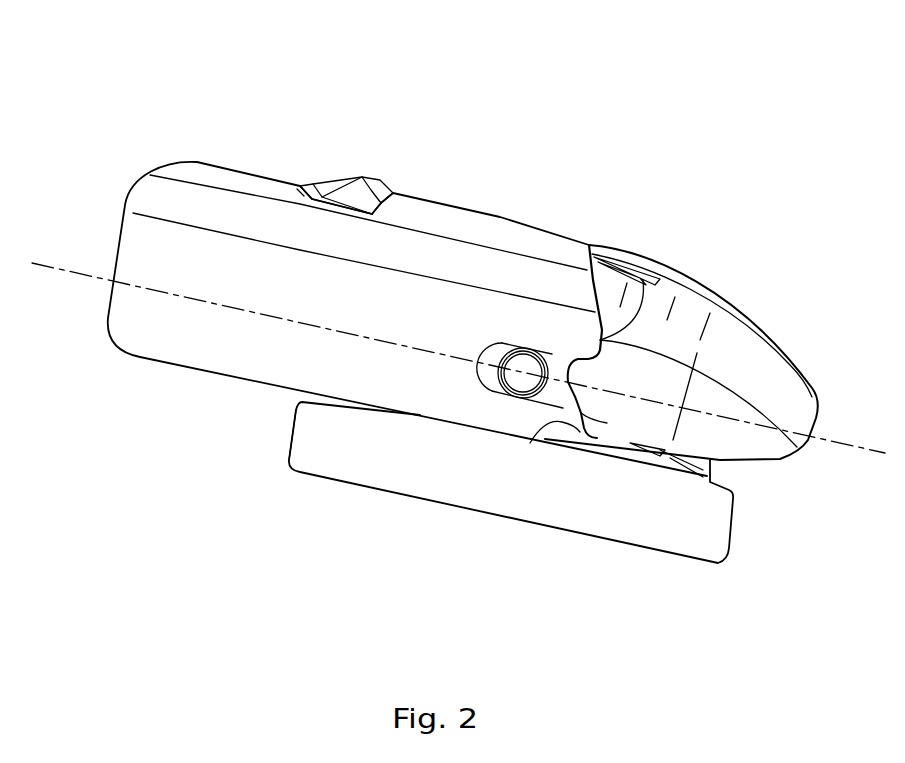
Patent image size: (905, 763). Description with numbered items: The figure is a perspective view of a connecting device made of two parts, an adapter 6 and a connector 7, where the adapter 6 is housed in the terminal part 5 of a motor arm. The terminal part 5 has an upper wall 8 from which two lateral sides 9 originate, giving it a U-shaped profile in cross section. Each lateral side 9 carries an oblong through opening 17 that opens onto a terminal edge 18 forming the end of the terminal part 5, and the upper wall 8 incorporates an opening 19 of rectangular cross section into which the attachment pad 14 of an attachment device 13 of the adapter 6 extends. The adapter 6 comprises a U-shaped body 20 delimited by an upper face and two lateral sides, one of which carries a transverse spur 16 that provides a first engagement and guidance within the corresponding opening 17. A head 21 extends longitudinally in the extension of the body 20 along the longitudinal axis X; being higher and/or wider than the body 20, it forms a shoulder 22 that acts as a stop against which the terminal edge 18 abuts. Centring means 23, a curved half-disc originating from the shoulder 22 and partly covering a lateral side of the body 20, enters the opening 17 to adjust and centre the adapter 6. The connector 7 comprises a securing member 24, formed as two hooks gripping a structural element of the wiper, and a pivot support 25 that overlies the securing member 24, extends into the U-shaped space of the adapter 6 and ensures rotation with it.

The terminal part 5 is at (232, 178).
The adapter 6 is at (708, 280).
The connector 7 is at (697, 563).
The upper wall 8 is at (478, 230).
The lateral sides 9 is at (148, 252).
The attachment device 13 is at (372, 178).
The attachment pad 14 is at (342, 193).
The transverse spur 16 is at (512, 378).
The through opening 17 is at (480, 385).
The terminal edge 18 is at (533, 428).
The opening 19 is at (297, 192).
The body 20 is at (557, 363).
The head 21 is at (758, 347).
The shoulder 22 is at (643, 280).
The centring means 23 is at (603, 397).
The securing member 24 is at (320, 455).
The pivot support 25 is at (720, 467).
The longitudinal axis X is at (457, 358).